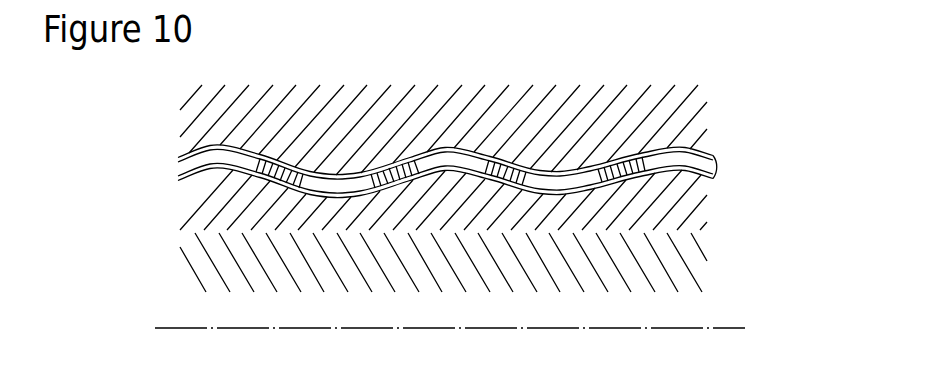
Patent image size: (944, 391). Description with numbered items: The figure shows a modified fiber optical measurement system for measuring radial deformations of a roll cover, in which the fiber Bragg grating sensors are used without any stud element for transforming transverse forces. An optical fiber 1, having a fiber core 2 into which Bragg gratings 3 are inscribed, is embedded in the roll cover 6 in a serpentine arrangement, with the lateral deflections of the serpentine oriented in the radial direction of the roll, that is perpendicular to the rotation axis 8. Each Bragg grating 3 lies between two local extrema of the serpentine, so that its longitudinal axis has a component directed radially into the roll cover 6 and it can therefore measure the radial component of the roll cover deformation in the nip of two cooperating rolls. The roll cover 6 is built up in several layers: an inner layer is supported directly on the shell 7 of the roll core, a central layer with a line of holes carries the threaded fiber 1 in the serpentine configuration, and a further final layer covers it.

The optical fiber 1 is at (716, 141).
The fiber core 2 is at (713, 165).
The Bragg grating 3 is at (617, 167).
The roll cover 6 is at (701, 97).
The shell 7 is at (706, 263).
The rotation axis 8 is at (745, 328).